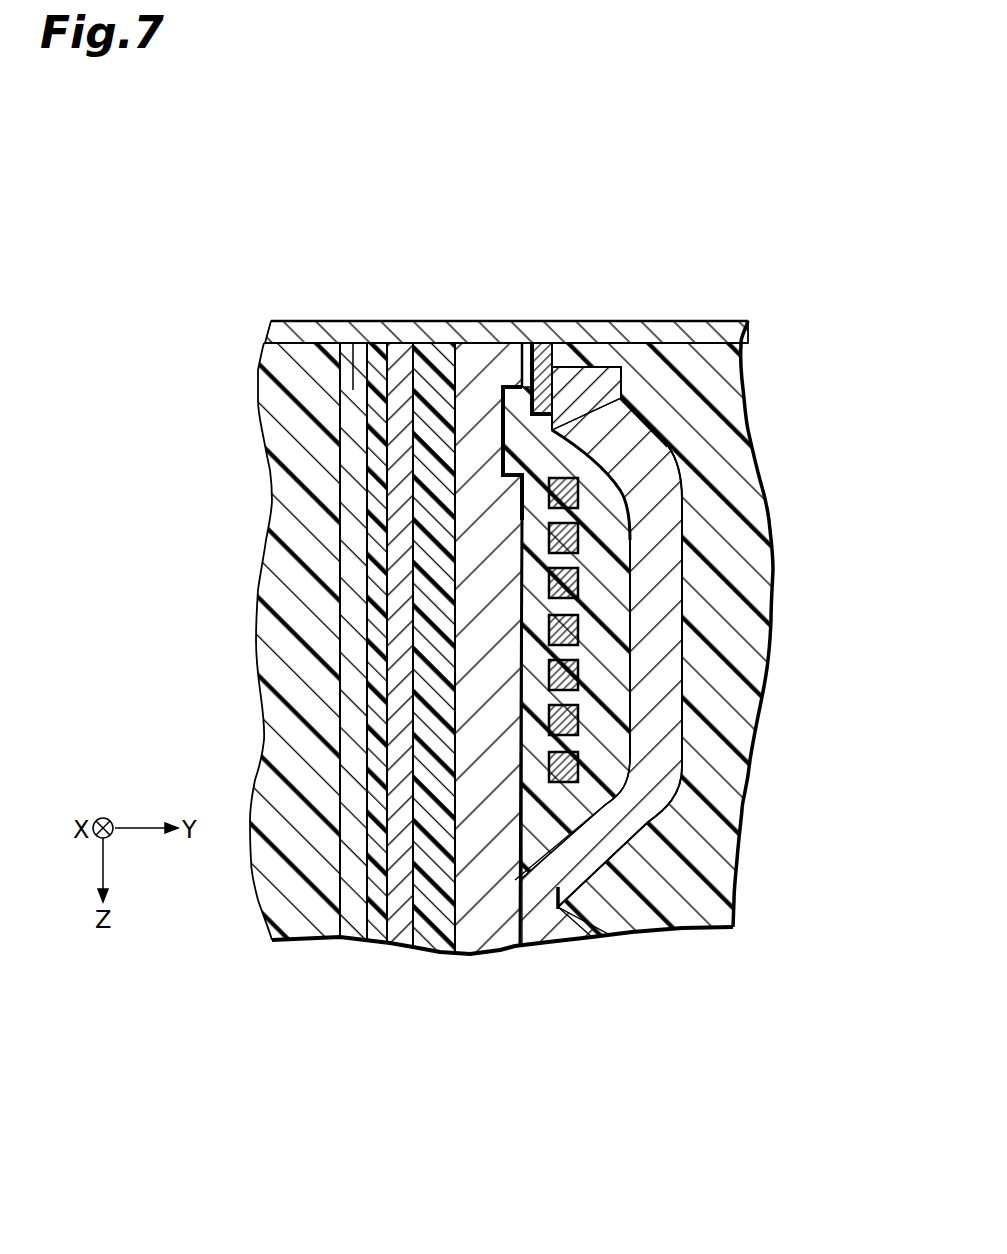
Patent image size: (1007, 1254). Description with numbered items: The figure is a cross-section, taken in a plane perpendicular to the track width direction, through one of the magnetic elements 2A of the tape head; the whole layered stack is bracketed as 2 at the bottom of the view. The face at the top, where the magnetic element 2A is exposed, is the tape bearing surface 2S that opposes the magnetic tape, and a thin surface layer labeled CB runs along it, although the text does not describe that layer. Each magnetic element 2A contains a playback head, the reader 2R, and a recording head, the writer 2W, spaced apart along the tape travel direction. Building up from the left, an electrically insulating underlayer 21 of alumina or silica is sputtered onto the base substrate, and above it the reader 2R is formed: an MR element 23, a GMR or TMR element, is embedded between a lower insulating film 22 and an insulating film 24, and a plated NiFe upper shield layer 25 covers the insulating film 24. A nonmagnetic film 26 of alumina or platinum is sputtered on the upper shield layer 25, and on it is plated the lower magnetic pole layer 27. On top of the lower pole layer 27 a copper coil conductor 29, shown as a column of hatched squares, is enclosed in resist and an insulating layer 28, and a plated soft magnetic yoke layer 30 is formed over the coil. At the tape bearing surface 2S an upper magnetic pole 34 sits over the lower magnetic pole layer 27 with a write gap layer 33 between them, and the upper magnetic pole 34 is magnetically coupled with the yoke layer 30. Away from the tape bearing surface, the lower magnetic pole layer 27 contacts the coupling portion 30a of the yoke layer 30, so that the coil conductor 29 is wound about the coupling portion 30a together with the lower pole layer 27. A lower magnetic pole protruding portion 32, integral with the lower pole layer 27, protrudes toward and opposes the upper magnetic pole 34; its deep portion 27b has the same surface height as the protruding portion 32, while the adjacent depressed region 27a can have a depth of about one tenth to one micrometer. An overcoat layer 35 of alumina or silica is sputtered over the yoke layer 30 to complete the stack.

The magnetic head slider 2 is at (760, 1040).
The magnetic elements 2A is at (573, 242).
The playback head (reader) 2R is at (374, 302).
The recording head (writer) 2W is at (581, 303).
The tape bearing surface 2S is at (713, 323).
The protective film CB is at (647, 343).
The underlayer 21 is at (298, 923).
The lower insulating film 22 is at (355, 927).
The MR element 23 is at (340, 343).
The insulating film 24 is at (378, 927).
The upper shield layer 25 is at (395, 933).
The nonmagnetic film 26 is at (417, 947).
The lower magnetic pole layer 27 is at (483, 940).
The depressed region 27a is at (514, 460).
The deep portion 27b is at (522, 523).
The insulating layer 28 is at (573, 805).
The coil conductor 29 is at (578, 768).
The yoke layer 30 is at (660, 617).
The coupling portion 30a is at (533, 867).
The lower magnetic pole protruding portion 32 is at (500, 343).
The write gap layer 33 is at (543, 358).
The upper magnetic pole 34 is at (580, 343).
The overcoat layer 35 is at (668, 903).